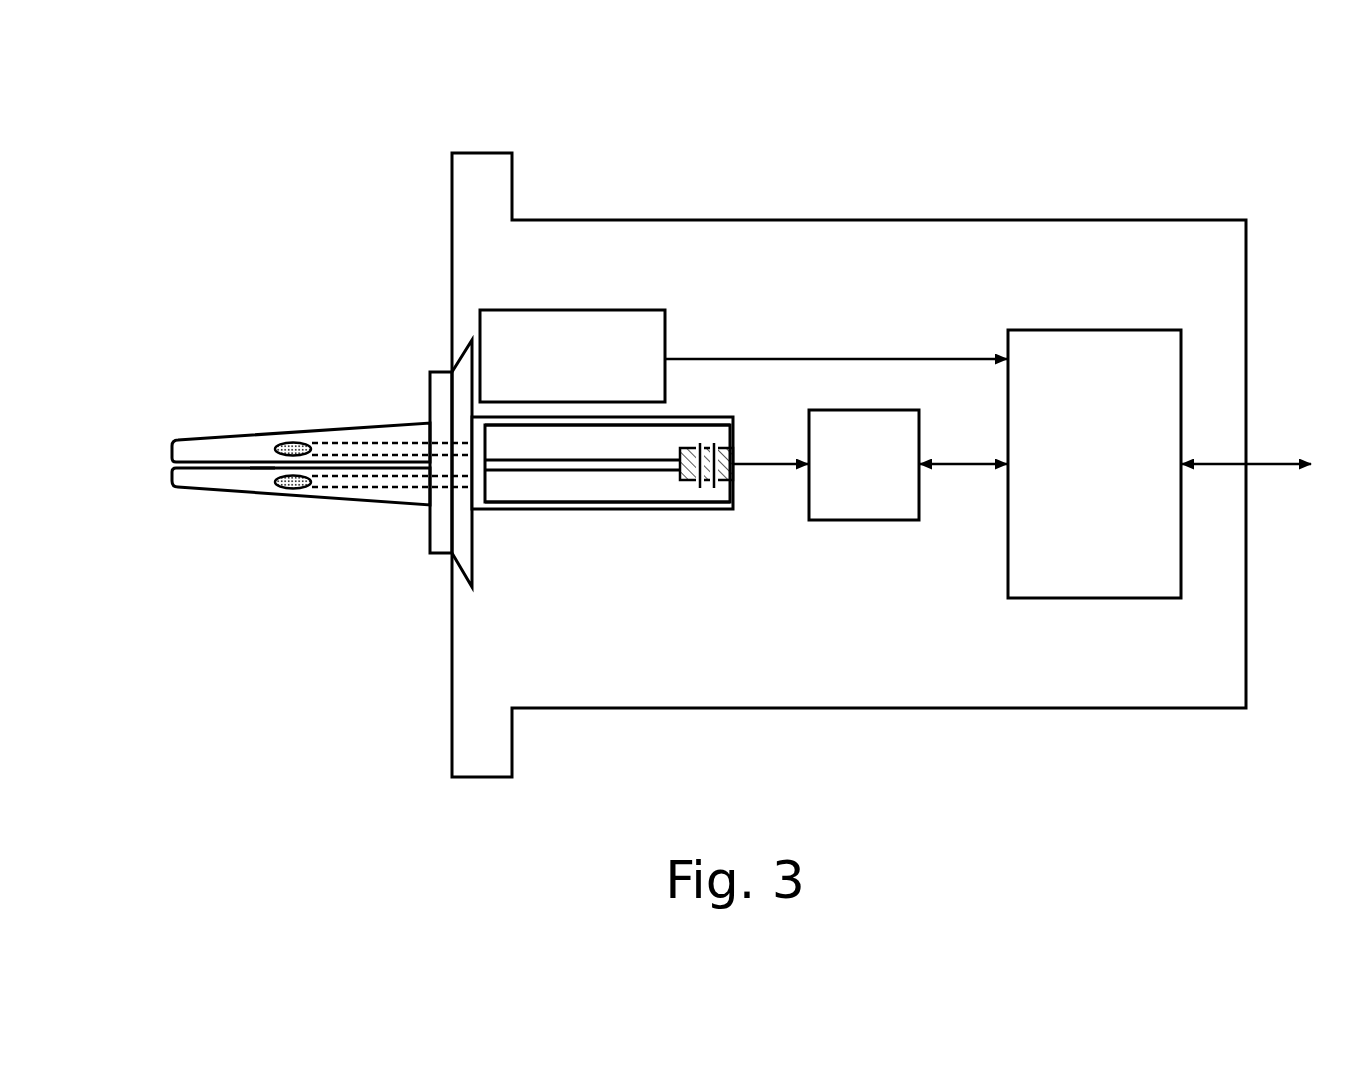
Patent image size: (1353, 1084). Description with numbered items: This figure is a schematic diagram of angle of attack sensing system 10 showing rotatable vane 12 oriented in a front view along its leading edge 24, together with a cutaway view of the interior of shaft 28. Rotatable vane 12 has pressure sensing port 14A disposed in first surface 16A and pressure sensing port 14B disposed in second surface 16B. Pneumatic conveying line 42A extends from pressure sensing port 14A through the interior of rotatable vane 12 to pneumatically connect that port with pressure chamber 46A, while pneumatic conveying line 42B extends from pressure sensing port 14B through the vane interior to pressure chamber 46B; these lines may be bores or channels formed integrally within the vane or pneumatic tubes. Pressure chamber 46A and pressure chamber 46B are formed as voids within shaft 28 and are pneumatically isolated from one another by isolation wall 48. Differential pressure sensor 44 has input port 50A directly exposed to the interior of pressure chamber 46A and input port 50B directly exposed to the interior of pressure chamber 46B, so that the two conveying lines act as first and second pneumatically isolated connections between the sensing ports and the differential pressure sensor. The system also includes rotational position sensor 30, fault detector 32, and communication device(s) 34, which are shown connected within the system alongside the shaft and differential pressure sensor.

The angle of attack sensing system 10 is at (710, 165).
The rotatable vane 12 is at (278, 462).
The pressure sensing port 14A is at (292, 442).
The pressure sensing port 14B is at (292, 488).
The first surface 16A is at (215, 445).
The second surface 16B is at (215, 485).
The leading edge 24 is at (261, 468).
The shaft 28 is at (527, 512).
The rotational position sensor 30 is at (572, 356).
The fault detector 32 is at (864, 465).
The communication device(s) 34 is at (1094, 464).
The pneumatic conveying line 42A is at (332, 442).
The pneumatic conveying line 42B is at (332, 490).
The differential pressure sensor 44 is at (718, 478).
The pressure chamber 46A is at (652, 441).
The pressure chamber 46B is at (620, 489).
The isolation wall 48 is at (537, 465).
The input port 50A is at (708, 450).
The input port 50B is at (701, 490).